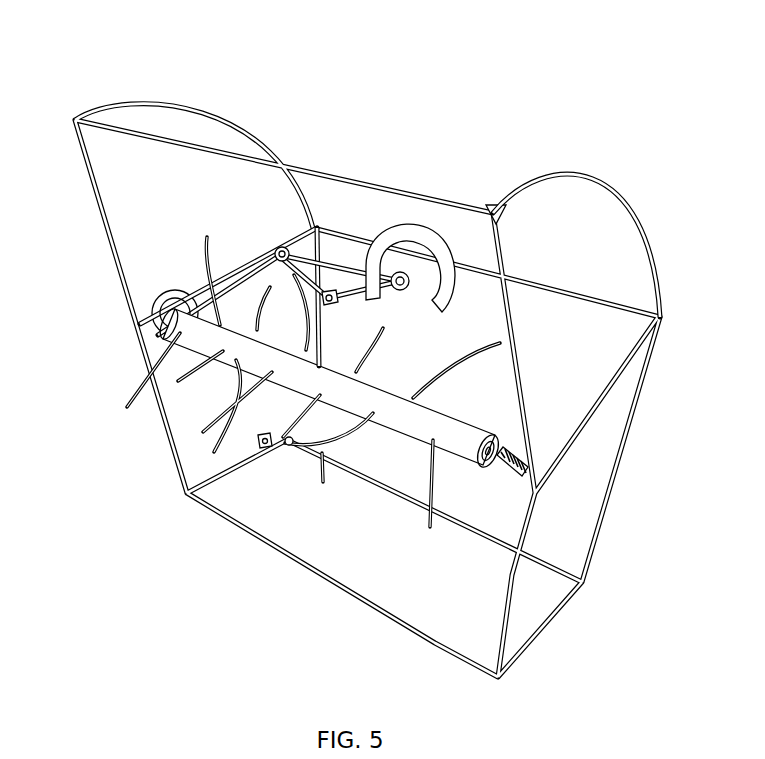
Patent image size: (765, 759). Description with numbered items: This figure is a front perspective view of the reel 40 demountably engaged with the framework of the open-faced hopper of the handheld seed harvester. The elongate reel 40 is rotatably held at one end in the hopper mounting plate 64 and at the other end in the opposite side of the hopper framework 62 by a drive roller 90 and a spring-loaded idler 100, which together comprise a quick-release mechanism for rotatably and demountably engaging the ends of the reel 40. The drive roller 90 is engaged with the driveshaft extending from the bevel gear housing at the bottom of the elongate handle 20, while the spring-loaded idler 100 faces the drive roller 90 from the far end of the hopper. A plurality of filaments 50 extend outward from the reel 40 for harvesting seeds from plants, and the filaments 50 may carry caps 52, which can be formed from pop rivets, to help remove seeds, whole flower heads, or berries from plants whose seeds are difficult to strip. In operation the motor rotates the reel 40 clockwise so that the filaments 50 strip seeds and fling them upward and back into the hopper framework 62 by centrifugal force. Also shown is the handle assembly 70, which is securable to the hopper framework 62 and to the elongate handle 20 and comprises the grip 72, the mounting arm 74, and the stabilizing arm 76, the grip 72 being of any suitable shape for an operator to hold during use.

The elongate handle 20 is at (257, 262).
The reel 40 is at (398, 440).
The filaments 50 is at (220, 425).
The caps 52 is at (324, 470).
The hopper framework 62 is at (588, 170).
The hopper mounting plate 64 is at (147, 285).
The handle assembly 70 is at (447, 107).
The grip 72 is at (403, 230).
The mounting arm 74 is at (345, 292).
The stabilizing arm 76 is at (318, 293).
The drive roller 90 is at (151, 320).
The spring-loaded idler 100 is at (493, 483).